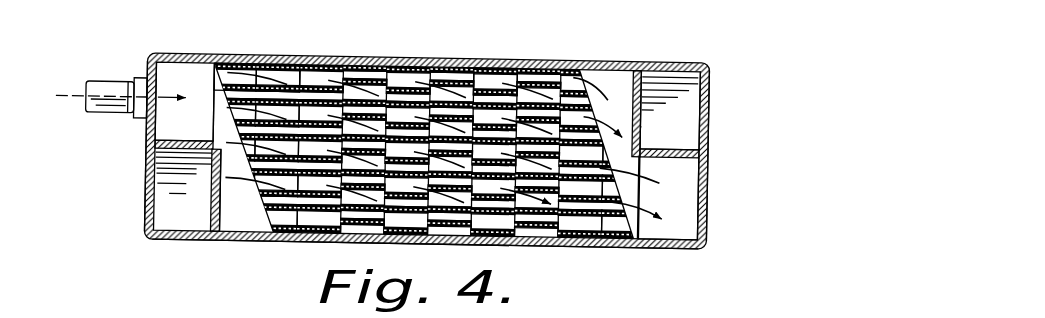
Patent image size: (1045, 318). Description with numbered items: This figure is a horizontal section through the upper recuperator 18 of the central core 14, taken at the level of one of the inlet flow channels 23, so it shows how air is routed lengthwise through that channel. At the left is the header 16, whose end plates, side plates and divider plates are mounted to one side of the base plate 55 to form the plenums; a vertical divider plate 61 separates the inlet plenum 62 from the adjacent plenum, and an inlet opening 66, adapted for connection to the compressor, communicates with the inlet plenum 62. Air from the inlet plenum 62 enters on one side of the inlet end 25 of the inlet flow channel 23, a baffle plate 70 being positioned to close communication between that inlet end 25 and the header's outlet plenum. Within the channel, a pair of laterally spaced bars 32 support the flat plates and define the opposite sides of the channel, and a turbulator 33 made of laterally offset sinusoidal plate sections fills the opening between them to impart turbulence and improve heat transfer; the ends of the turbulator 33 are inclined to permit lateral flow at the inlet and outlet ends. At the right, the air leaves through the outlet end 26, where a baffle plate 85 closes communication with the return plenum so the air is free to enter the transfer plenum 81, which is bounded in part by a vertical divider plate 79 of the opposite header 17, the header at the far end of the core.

The central core 14 is at (388, 57).
The header 16 is at (143, 187).
The end wall 17 is at (712, 172).
The recuperator 18 is at (605, 252).
The inlet flow channel 23 is at (268, 84).
The inlet end 25 is at (215, 115).
The outlet end 26 is at (621, 64).
The bar 32 is at (590, 58).
The turbulator 33 is at (480, 90).
The base plate 55 is at (145, 212).
The vertical divider plate 61 is at (157, 167).
The inlet plenum 62 is at (163, 72).
The inlet opening 66 is at (148, 105).
The baffle plate 70 is at (217, 212).
The vertical divider plate 79 is at (693, 143).
The transfer plenum 81 is at (677, 204).
The baffle plate 85 is at (640, 128).